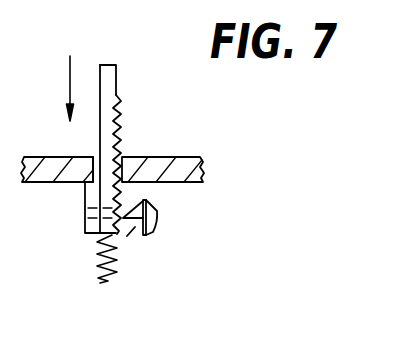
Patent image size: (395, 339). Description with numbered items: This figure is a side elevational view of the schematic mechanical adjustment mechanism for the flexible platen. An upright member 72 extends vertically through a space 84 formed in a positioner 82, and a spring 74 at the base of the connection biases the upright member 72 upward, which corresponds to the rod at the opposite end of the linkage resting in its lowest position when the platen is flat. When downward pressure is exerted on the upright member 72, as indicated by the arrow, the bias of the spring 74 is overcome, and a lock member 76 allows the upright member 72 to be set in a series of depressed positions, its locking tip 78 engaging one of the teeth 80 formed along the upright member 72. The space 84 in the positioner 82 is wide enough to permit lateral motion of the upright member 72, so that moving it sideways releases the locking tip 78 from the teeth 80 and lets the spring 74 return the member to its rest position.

The upright member 72 is at (113, 85).
The spring 74 is at (98, 257).
The lock member 76 is at (157, 215).
The locking tip 78 is at (124, 223).
The teeth 80 is at (117, 135).
The positioner 82 is at (202, 157).
The space 84 is at (95, 157).